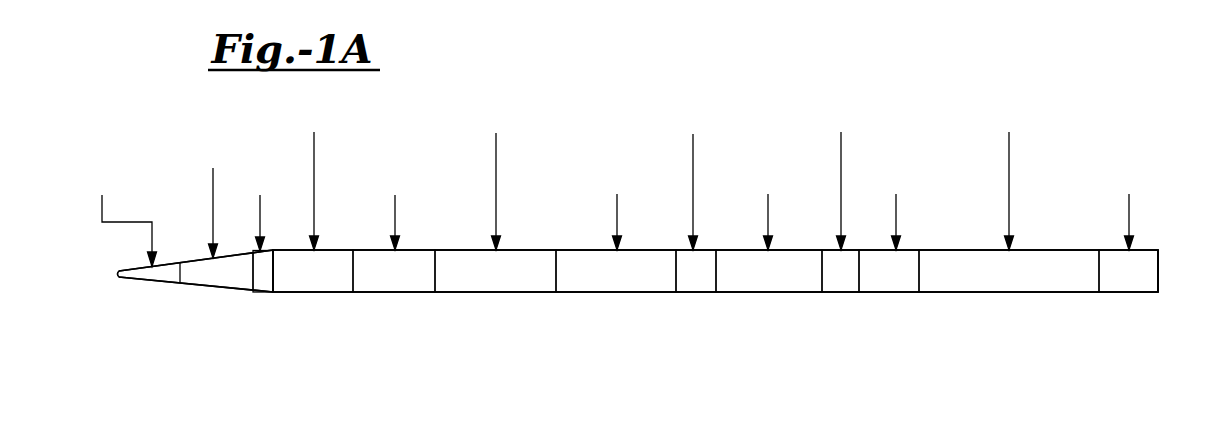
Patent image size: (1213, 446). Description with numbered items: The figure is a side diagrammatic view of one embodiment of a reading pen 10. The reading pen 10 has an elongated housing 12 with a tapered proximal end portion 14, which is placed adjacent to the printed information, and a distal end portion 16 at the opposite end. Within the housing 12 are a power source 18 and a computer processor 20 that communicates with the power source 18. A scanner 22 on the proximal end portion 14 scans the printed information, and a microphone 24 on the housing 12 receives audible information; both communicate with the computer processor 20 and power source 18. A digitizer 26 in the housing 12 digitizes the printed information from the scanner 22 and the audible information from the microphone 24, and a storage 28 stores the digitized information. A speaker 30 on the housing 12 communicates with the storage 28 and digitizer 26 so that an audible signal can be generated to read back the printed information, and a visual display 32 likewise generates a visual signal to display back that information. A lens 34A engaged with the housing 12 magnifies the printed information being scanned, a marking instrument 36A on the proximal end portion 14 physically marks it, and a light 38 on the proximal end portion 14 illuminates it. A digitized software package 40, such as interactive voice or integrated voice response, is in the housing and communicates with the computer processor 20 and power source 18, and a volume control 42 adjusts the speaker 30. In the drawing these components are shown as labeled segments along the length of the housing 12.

The reading pen 10 is at (176, 120).
The housing 12 is at (455, 292).
The proximal end portion 14 is at (184, 302).
The distal end portion 16 is at (1146, 314).
The power source 18 is at (693, 292).
The computer processor 20 is at (785, 292).
The scanner 22 is at (217, 289).
The microphone 24 is at (1120, 292).
The digitizer 26 is at (392, 292).
The storage 28 is at (537, 292).
The speaker 30 is at (910, 292).
The visual display 32 is at (998, 292).
The lens 34A is at (148, 281).
The marking instrument 36A is at (302, 292).
The light 38 is at (262, 292).
The digitized software package 40 is at (608, 292).
The volume control 42 is at (840, 292).